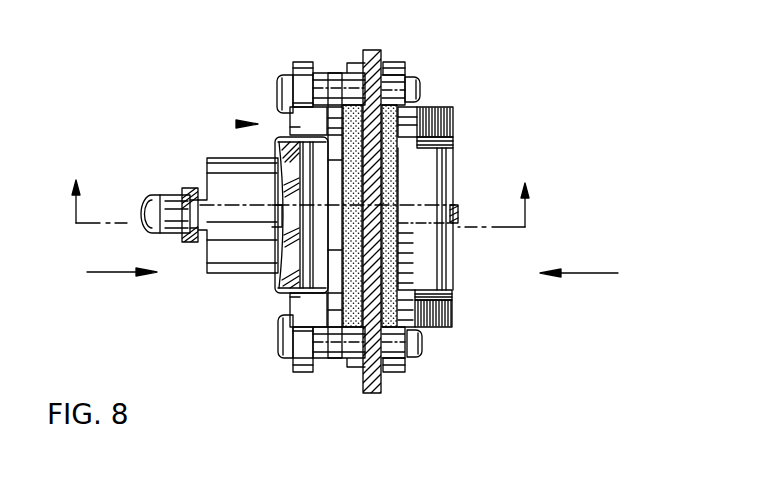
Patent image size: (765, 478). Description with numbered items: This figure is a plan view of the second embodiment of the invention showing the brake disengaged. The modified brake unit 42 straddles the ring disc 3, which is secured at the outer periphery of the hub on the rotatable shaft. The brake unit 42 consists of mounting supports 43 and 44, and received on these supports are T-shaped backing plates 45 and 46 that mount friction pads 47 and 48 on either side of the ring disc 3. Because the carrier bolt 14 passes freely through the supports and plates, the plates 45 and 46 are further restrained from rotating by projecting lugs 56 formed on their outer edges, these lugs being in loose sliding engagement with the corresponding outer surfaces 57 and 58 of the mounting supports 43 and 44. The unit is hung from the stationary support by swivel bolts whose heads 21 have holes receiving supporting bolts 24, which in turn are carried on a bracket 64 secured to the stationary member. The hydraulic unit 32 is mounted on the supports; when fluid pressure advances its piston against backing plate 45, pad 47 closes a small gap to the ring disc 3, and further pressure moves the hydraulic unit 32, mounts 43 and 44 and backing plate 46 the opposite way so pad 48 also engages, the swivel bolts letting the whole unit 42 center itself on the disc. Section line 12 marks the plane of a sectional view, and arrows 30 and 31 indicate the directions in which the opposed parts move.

The ring disc 3 is at (380, 53).
The backing plate 12 is at (306, 185).
The carrier bolt 14 is at (458, 212).
The head of swivel bolt 21 is at (357, 68).
The supporting bolt 24 is at (288, 88).
The direction arrow 30 is at (107, 273).
The direction arrow 31 is at (590, 273).
The hydraulic unit 32 is at (220, 180).
The brake unit 42 is at (306, 117).
The mounting support 43 is at (290, 273).
The mounting support 44 is at (428, 257).
The backing plate 45 is at (325, 107).
The backing plate 46 is at (432, 115).
The friction pad 47 is at (345, 107).
The friction pad 48 is at (408, 120).
The projecting lug 56 is at (307, 120).
The outer surface 57 is at (295, 127).
The outer surface 58 is at (440, 137).
The bracket 64 is at (300, 72).